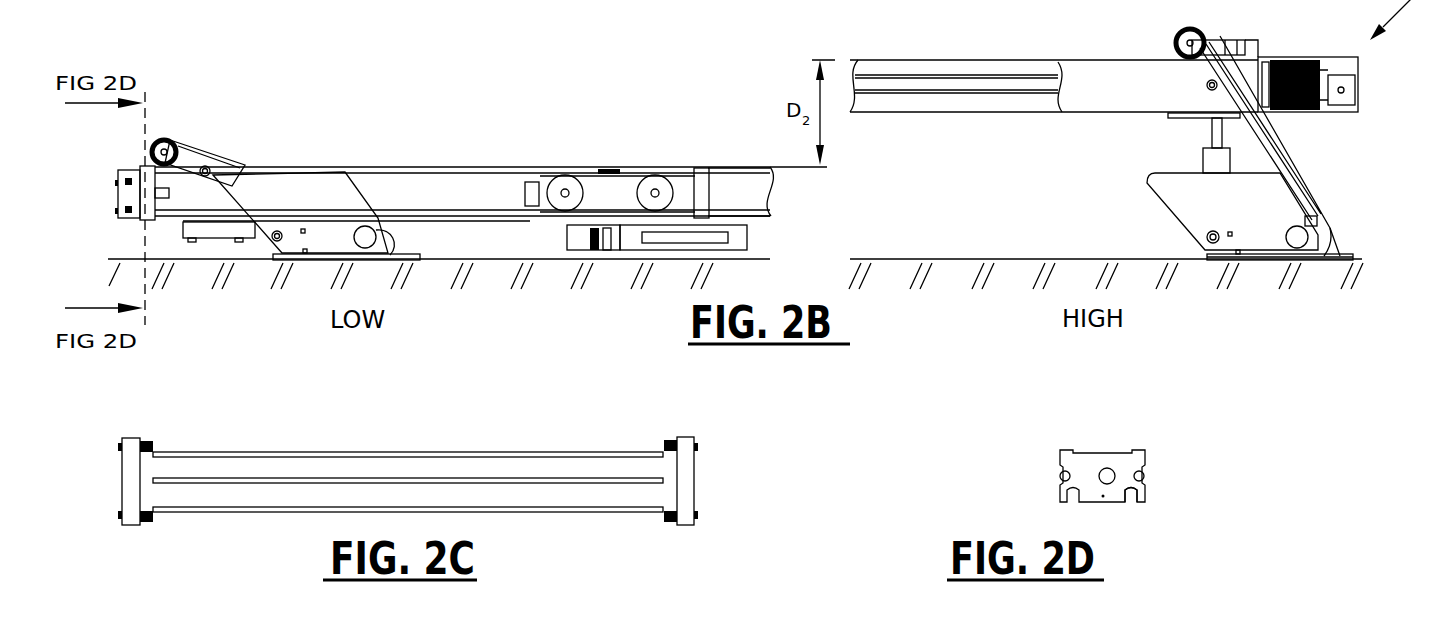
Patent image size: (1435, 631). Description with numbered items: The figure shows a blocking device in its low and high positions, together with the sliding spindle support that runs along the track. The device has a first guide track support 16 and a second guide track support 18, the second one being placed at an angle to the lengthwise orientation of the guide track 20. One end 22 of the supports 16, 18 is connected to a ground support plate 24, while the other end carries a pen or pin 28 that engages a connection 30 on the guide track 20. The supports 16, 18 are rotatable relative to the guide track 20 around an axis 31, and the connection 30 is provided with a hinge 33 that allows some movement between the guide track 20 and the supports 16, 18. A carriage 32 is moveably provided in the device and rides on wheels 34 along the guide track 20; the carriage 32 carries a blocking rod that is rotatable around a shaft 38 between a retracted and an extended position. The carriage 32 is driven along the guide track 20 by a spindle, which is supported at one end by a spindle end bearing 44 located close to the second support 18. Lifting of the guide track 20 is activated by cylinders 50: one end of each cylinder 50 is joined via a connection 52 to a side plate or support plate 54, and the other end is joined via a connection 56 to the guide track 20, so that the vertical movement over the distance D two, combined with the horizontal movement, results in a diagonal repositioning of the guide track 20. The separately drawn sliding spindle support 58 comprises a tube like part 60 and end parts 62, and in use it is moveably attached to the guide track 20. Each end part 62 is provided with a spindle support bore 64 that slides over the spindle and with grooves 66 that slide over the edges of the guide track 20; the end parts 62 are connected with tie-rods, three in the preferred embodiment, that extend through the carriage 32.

In FIG. 2B, the first guide track support 16 is at (1350, 184).
In FIG. 2B, the second guide track support 18 is at (302, 135).
In FIG. 2B, the guide track 20 is at (438, 166).
In FIG. 2B, the one end of supports 22 is at (1360, 226).
In FIG. 2B, the ground support plate 24 is at (1352, 262).
In FIG. 2B, the pen or pin 28 is at (1180, 34).
In FIG. 2B, the connection 30 is at (1255, 20).
In FIG. 2B, the axis 31 is at (366, 246).
In FIG. 2B, the carriage 32 is at (608, 192).
In FIG. 2B, the hinge 33 is at (1270, 46).
In FIG. 2B, the wheels 34 is at (548, 193).
In FIG. 2B, the shaft 38 is at (607, 170).
In FIG. 2B, the spindle end bearing 44 is at (100, 205).
In FIG. 2B, the cylinder 50 is at (1200, 162).
In FIG. 2B, the connection 52 is at (1206, 237).
In FIG. 2B, the side plate or support plate 54 is at (1175, 190).
In FIG. 2B, the connection 56 is at (1205, 85).
In FIG. 2C, the sliding spindle support 58 is at (430, 448).
In FIG. 2C, the tube like part 60 is at (233, 467).
In FIG. 2C, the end parts 62 is at (130, 443).
In FIG. 2D, the end parts 62 is at (1158, 475).
In FIG. 2D, the spindle support bore 64 is at (1107, 468).
In FIG. 2D, the grooves 66 is at (1130, 523).